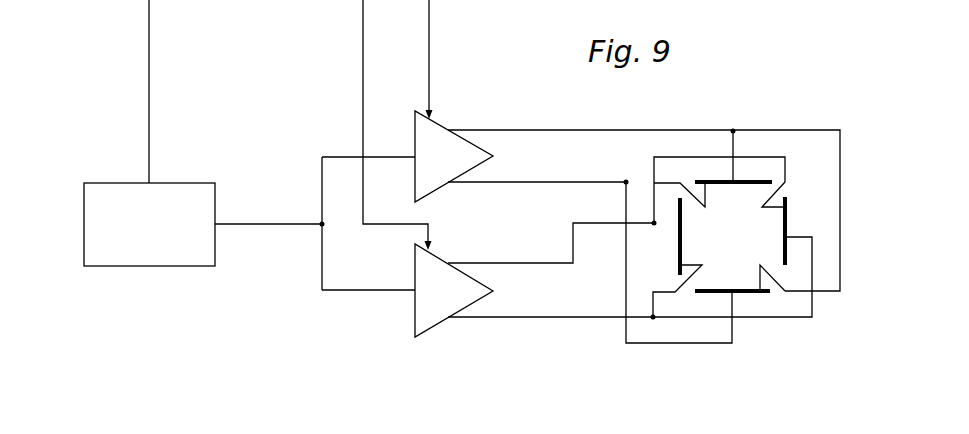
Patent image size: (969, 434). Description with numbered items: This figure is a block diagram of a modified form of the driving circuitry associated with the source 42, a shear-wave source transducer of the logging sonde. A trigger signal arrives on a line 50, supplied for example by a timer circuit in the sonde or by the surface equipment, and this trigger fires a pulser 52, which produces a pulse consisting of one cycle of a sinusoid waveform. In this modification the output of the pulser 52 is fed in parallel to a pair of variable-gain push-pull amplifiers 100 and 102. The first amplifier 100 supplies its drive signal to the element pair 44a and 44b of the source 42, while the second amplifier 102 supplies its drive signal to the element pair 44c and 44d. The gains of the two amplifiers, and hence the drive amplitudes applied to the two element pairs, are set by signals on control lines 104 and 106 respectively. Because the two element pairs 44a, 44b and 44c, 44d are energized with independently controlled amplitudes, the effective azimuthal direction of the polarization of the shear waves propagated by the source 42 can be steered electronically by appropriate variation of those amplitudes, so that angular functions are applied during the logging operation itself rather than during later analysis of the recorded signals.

The line 50 is at (117, 0).
The pulser 52 is at (118, 183).
The variable-gain push-pull amplifier 100 is at (418, 127).
The variable-gain push-pull amplifier 102 is at (420, 308).
The control line 104 is at (429, 52).
The control line 106 is at (363, 90).
The source 42 is at (752, 209).
The element 44a is at (771, 182).
The element 44b is at (758, 293).
The element 44c is at (679, 199).
The element 44d is at (787, 262).